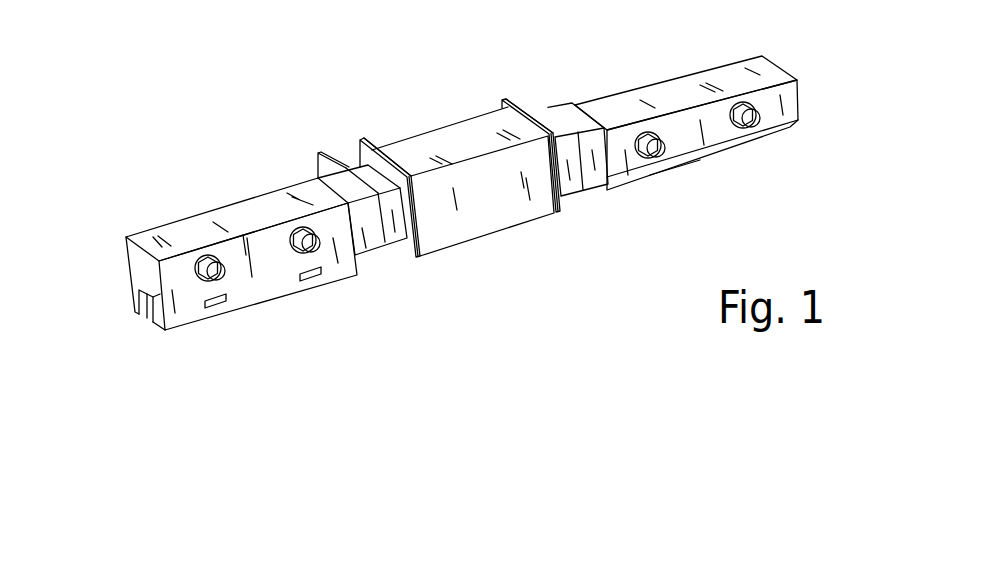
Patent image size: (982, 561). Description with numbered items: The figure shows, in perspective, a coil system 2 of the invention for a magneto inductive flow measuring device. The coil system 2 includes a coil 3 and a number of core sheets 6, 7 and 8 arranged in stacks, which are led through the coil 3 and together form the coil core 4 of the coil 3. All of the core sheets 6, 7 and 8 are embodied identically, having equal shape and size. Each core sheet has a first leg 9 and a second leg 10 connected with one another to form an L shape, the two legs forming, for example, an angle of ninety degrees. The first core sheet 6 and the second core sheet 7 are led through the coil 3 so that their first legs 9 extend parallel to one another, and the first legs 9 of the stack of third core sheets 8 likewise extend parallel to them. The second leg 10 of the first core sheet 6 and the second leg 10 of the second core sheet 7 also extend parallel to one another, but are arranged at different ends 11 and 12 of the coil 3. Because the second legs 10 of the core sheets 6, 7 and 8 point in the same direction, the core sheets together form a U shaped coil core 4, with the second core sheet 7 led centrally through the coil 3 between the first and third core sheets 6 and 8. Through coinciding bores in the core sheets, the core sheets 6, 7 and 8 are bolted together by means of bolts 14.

The coil system 2 is at (177, 176).
The coil 3 is at (515, 208).
The coil core 4 is at (104, 215).
The first core sheet 6 is at (197, 313).
The second core sheet 7 is at (784, 138).
The third core sheet 8 is at (145, 300).
The first leg 9 is at (702, 137).
The second leg 10 is at (270, 270).
The end of the coil 11 is at (385, 175).
The end of the coil 12 is at (517, 103).
The bolts 14 is at (212, 273).